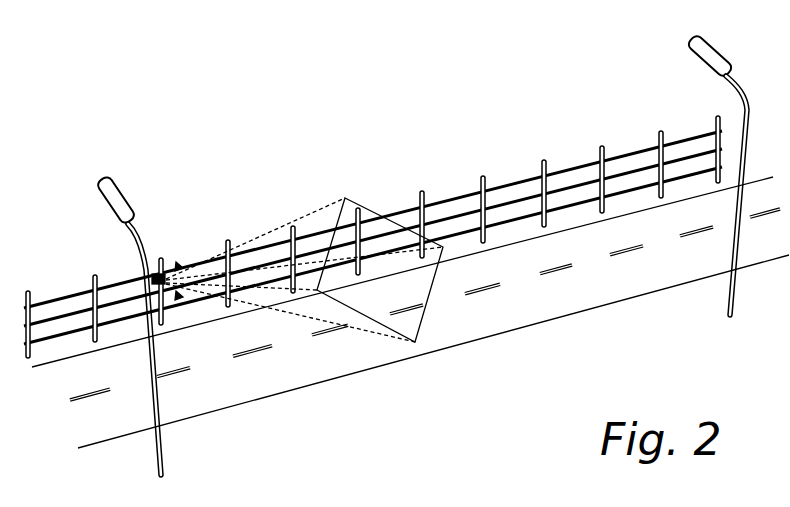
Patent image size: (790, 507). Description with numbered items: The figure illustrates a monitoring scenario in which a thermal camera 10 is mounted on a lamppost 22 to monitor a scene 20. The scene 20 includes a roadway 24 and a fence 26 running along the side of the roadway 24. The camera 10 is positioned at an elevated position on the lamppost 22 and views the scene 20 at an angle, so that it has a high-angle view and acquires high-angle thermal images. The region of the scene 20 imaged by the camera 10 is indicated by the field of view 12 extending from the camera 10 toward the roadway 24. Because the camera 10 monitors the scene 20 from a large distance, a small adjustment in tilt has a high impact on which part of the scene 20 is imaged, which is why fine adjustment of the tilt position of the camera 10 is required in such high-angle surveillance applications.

The camera 10 is at (156, 267).
The field of view 12 is at (268, 236).
The scene 20 is at (324, 182).
The lamppost 22 is at (155, 360).
The roadway 24 is at (500, 312).
The fence 26 is at (63, 298).